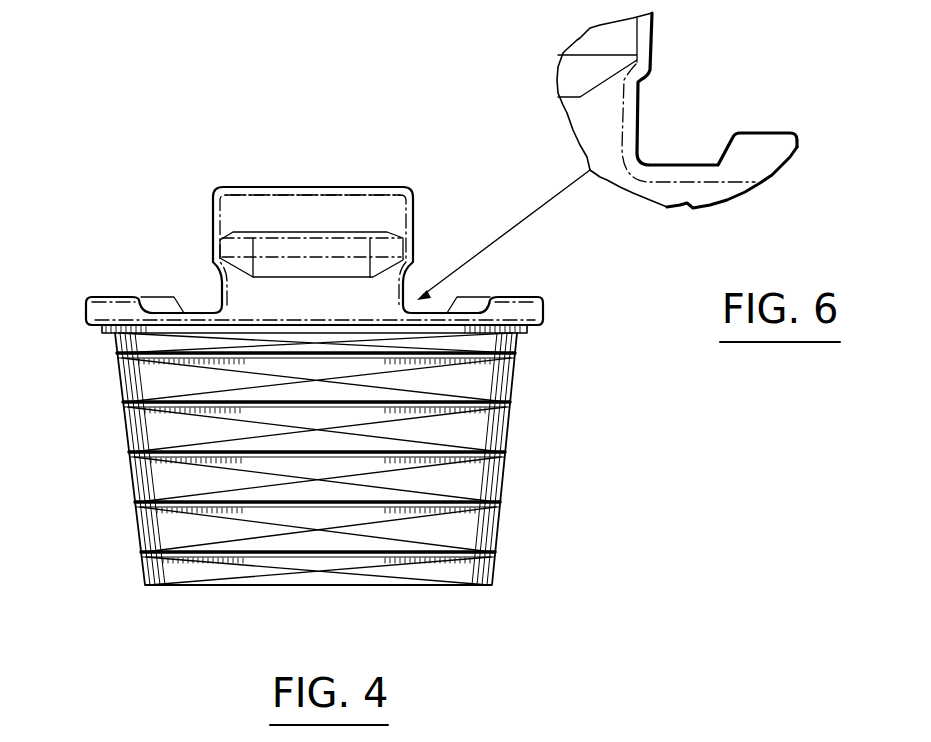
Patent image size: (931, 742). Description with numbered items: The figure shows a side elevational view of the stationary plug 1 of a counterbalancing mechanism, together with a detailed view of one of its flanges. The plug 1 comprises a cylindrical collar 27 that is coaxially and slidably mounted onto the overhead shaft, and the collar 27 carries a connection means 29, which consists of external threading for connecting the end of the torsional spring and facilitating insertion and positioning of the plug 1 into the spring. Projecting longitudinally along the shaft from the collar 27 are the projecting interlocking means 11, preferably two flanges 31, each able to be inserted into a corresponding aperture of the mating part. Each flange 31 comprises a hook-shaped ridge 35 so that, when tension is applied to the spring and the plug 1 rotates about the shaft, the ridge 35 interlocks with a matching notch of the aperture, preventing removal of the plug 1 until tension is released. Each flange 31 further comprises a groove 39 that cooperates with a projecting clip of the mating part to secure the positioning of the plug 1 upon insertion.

In FIG. 4, the plug 1 is at (100, 280).
In FIG. 4, the projecting interlocking means 11 is at (213, 228).
In FIG. 4, the cylindrical collar 27 is at (129, 472).
In FIG. 4, the connection means 29 is at (420, 428).
In FIG. 4, the flange 31 is at (302, 187).
In FIG. 6, the hook-shaped ridge 35 is at (659, 78).
In FIG. 4, the groove 39 is at (243, 248).